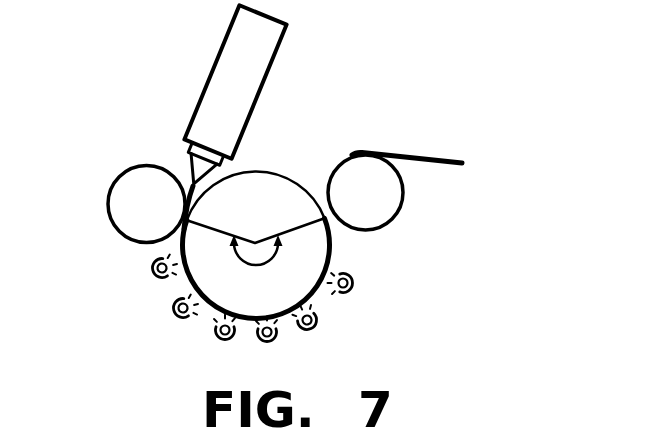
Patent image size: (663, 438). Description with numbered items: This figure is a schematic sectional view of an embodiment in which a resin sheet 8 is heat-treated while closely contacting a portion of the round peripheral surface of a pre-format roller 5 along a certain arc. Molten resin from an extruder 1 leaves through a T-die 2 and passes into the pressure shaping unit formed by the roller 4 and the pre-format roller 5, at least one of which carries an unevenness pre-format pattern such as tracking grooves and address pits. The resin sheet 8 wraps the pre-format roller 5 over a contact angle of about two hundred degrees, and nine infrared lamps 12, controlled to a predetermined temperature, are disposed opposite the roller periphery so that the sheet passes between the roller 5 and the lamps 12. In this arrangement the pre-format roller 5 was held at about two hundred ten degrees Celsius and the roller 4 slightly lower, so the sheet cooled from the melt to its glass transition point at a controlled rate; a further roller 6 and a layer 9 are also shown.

The extruder 1 is at (236, 53).
The T-die 2 is at (184, 167).
The roller 4 is at (128, 220).
The pre-format roller 5 is at (282, 188).
The roller 6 is at (387, 200).
The resin sheet 8 is at (430, 157).
The coating layer 9 is at (190, 219).
The infrared lamps 12 is at (156, 279).